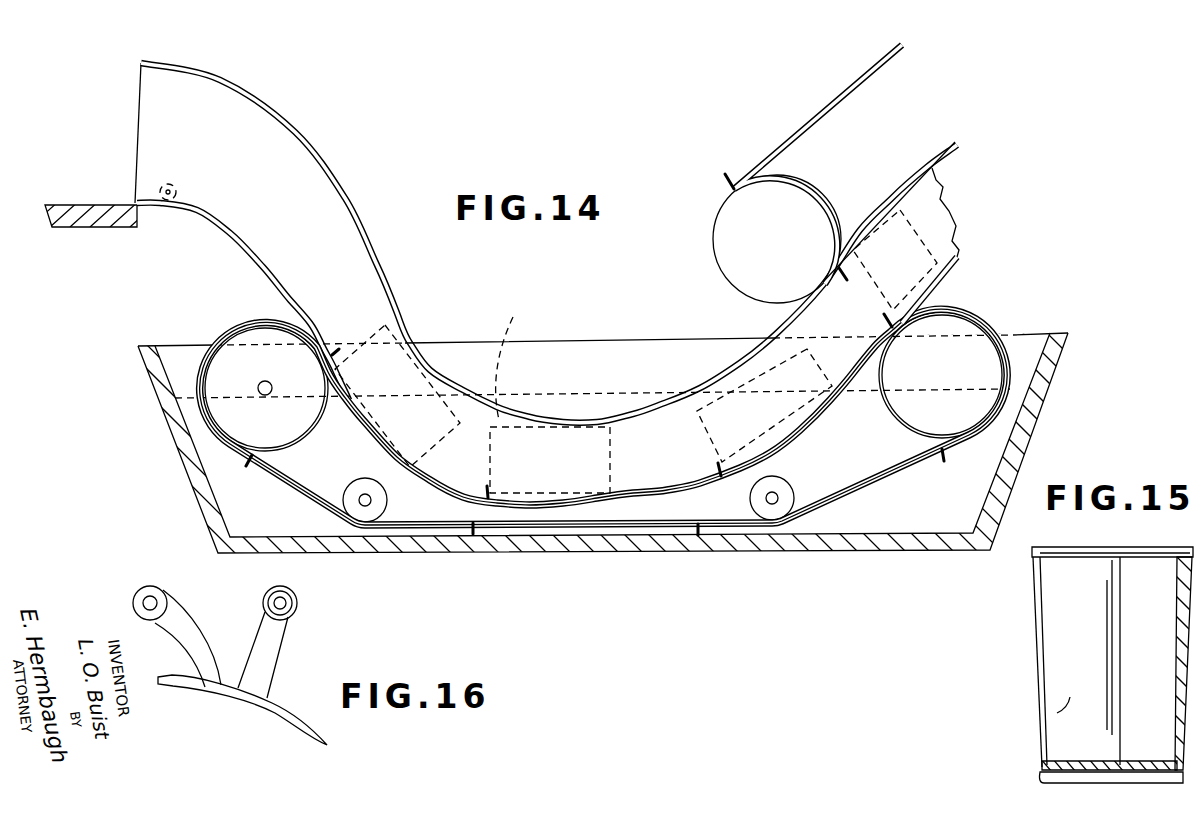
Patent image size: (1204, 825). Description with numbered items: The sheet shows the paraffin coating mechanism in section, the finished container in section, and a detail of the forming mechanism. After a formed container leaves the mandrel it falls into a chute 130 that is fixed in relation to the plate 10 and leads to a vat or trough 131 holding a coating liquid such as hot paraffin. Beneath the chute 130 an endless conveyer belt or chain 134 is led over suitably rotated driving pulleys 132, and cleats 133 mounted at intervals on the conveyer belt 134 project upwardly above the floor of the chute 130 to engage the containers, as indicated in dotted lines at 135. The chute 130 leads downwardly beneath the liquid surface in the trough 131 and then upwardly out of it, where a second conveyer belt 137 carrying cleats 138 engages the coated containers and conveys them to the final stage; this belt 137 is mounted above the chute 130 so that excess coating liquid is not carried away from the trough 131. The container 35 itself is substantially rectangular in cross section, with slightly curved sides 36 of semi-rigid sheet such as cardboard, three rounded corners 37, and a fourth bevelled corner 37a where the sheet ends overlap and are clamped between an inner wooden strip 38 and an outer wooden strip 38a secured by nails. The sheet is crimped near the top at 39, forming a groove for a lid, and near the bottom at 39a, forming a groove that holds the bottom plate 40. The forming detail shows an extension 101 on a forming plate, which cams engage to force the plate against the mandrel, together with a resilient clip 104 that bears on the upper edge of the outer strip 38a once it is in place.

In FIG. 14, the plate 10 is at (98, 218).
In FIG. 14, the chute 130 is at (277, 153).
In FIG. 14, the trough 131 is at (584, 540).
In FIG. 14, the driving pulleys 132 is at (292, 433).
In FIG. 14, the cleats 133 is at (494, 493).
In FIG. 14, the conveyer belt 134 is at (870, 484).
In FIG. 14, the container position 135 is at (500, 332).
In FIG. 14, the second conveyer belt 137 is at (827, 113).
In FIG. 14, the cleats 138 is at (722, 184).
In FIG. 15, the container 35 is at (1112, 657).
In FIG. 15, the sides 36 is at (1043, 722).
In FIG. 15, the rounded corners 37 is at (1105, 652).
In FIG. 15, the bevelled corner 37a is at (1047, 723).
In FIG. 15, the inner wooden strip 38 is at (1170, 578).
In FIG. 15, the outer wooden strip 38a is at (1188, 648).
In FIG. 15, the upper crimp 39 is at (1038, 560).
In FIG. 15, the lower crimp 39a is at (1009, 762).
In FIG. 15, the bottom plate 40 is at (1097, 768).
In FIG. 16, the extensions 101 is at (268, 652).
In FIG. 16, the resilient clips 104 is at (162, 673).